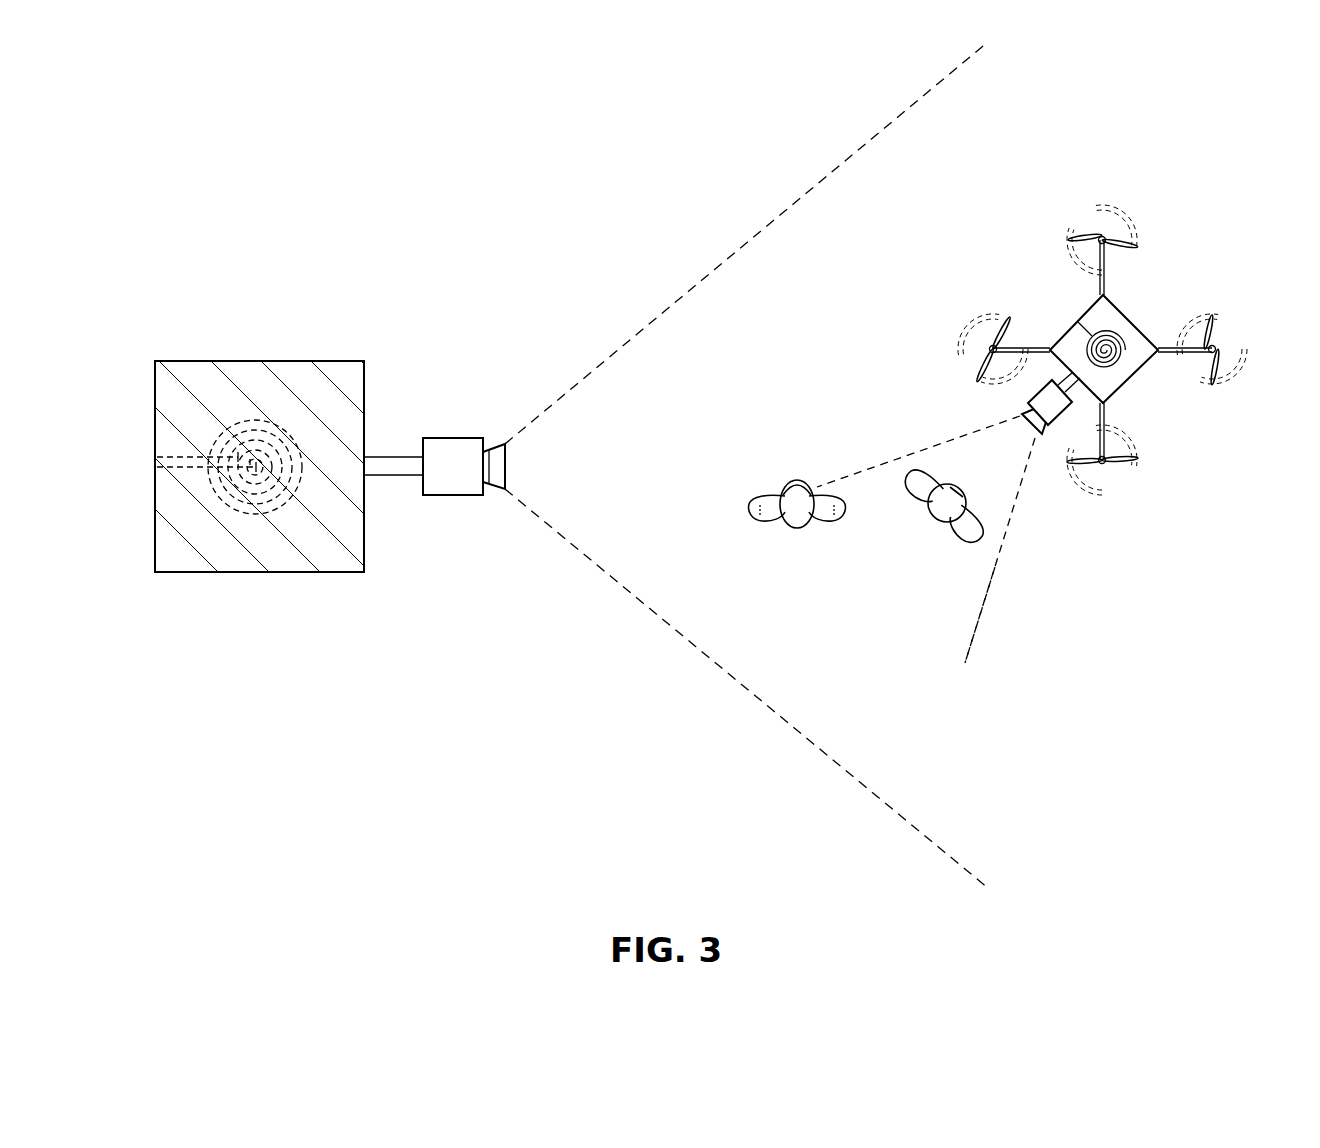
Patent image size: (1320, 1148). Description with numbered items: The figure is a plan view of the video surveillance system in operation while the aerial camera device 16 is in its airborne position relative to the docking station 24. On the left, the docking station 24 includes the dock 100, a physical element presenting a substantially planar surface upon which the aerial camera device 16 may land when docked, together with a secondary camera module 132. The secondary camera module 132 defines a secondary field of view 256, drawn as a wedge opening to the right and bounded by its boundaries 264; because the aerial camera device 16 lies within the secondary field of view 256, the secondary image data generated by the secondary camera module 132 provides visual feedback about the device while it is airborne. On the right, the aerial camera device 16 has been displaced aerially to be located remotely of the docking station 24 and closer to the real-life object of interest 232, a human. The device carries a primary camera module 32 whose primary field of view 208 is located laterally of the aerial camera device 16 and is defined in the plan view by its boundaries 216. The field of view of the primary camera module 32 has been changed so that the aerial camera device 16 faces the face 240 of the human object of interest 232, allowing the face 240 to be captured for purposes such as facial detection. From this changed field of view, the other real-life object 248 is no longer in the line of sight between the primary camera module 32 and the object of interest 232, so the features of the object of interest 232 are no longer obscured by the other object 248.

The aerial camera device 16 is at (1132, 318).
The docking station 24 is at (228, 361).
The primary camera module 32 is at (1030, 402).
The dock 100 is at (307, 393).
The secondary camera module 132 is at (455, 440).
The primary field of view 208 is at (968, 590).
The boundaries of the primary field of view 216 is at (940, 448).
The real-life object of interest 232 is at (933, 513).
The face 240 is at (970, 480).
The other real-life object 248 is at (800, 527).
The secondary field of view 256 is at (662, 411).
The boundaries of the secondary field of view 264 is at (865, 145).